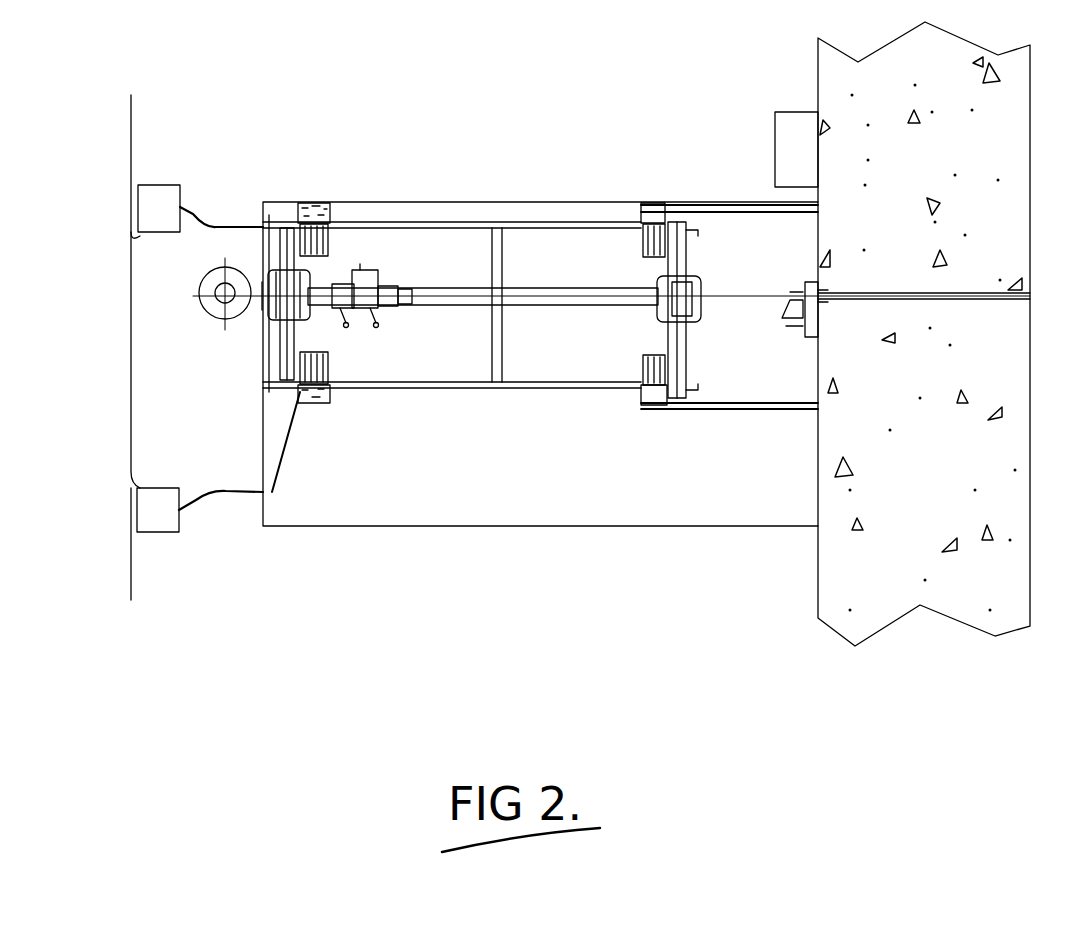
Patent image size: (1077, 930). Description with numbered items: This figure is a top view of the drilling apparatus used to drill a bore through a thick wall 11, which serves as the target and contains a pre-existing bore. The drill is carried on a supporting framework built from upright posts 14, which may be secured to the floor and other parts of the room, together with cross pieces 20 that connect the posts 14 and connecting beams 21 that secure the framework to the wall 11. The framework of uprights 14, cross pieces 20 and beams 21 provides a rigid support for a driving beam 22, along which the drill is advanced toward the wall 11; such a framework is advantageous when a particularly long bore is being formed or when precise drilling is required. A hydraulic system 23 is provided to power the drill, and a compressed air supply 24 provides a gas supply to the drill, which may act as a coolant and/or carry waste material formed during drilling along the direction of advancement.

The wall 11 is at (950, 521).
The posts 14 is at (308, 202).
The cross pieces 20 is at (408, 220).
The connecting beams 21 is at (686, 204).
The driving beam 22 is at (515, 285).
The hydraulic system 23 is at (150, 184).
The compressed air supply 24 is at (176, 533).